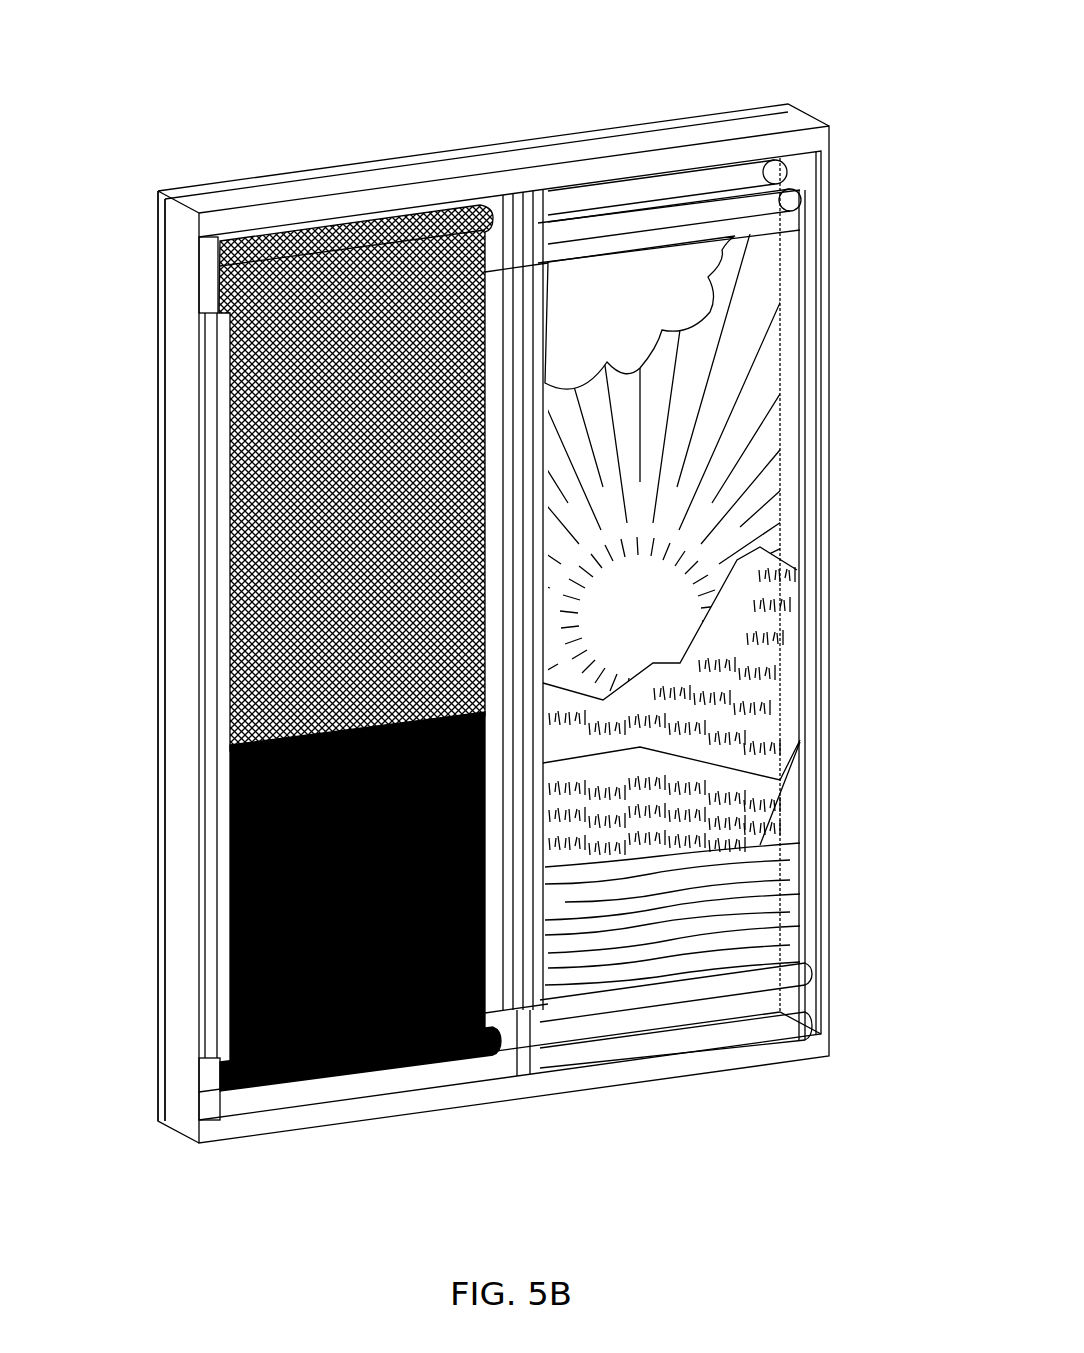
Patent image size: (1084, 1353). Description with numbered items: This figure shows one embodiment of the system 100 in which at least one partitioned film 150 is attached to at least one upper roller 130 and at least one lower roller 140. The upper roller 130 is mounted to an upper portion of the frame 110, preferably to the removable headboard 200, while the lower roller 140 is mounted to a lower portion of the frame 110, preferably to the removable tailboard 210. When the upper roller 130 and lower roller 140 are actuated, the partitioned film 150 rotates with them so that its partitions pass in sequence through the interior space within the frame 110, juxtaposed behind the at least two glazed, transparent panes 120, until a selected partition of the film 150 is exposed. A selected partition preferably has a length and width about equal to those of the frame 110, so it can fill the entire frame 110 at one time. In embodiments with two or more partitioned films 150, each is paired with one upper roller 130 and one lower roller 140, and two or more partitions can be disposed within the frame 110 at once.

The system 100 is at (150, 38).
The frame 110 is at (178, 662).
The glazed, transparent panes 120 is at (155, 380).
The upper roller 130 is at (401, 218).
The lower roller 140 is at (325, 1075).
The partitioned film 150 is at (235, 522).
The removable headboard 200 is at (205, 292).
The removable tailboard 210 is at (207, 1115).